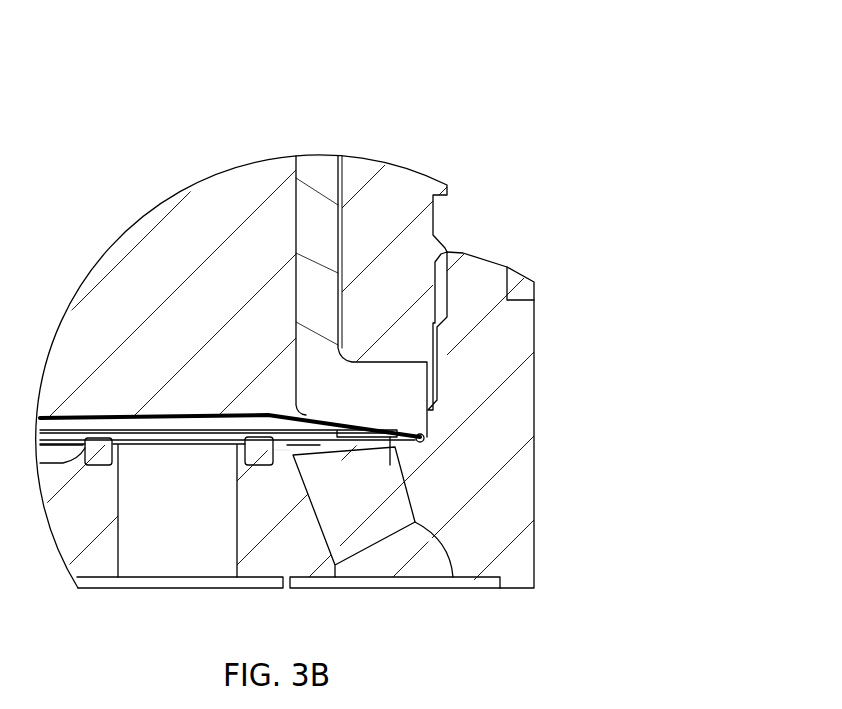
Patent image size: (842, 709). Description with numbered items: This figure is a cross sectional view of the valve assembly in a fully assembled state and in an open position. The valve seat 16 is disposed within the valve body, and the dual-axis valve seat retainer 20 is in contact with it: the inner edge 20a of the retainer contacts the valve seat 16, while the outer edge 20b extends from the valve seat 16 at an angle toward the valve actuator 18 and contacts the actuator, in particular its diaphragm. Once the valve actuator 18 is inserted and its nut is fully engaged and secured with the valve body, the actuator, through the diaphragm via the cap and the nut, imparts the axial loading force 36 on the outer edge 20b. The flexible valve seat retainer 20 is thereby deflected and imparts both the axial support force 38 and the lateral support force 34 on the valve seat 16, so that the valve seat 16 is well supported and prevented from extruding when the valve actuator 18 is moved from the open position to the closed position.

The valve seat 16 is at (257, 457).
The valve actuator 18 is at (157, 245).
The dual-axis valve seat retainer 20 is at (373, 442).
The inner edge of the valve seat retainer 20a is at (271, 448).
The outer edge of the valve seat retainer 20b is at (428, 437).
The lateral support force 34 is at (292, 451).
The axial loading force 36 is at (416, 390).
The axial support force 38 is at (268, 410).